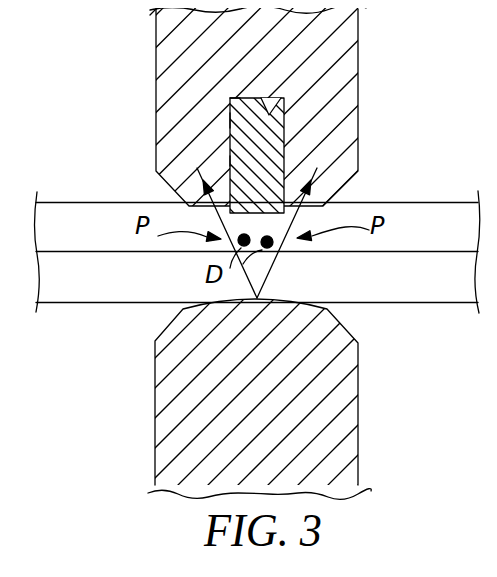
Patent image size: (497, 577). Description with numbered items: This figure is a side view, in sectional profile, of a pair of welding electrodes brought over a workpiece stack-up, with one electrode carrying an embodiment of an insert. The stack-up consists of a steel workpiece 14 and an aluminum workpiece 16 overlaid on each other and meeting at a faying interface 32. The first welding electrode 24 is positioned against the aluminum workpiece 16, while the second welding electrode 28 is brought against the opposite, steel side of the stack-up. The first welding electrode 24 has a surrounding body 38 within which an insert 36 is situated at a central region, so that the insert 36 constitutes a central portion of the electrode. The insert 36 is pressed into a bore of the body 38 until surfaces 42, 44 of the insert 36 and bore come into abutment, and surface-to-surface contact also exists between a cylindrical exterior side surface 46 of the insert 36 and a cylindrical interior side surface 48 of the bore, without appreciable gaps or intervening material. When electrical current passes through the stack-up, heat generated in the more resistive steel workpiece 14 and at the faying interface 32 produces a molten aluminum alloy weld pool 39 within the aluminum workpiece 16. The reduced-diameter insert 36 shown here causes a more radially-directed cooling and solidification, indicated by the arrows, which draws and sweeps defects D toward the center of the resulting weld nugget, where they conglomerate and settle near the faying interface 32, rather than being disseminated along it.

The first welding electrode 24 is at (371, 29).
The body 38 is at (328, 90).
The insert 36 is at (268, 150).
The surface 42 is at (240, 99).
The surface 44 is at (279, 109).
The cylindrical exterior side surface 46 is at (229, 127).
The cylindrical interior side surface 48 is at (238, 162).
The molten aluminum alloy weld pool 39 is at (258, 226).
The aluminum workpiece 16 is at (429, 218).
The faying interface 32 is at (127, 257).
The steel workpiece 14 is at (416, 285).
The second welding electrode 28 is at (373, 403).